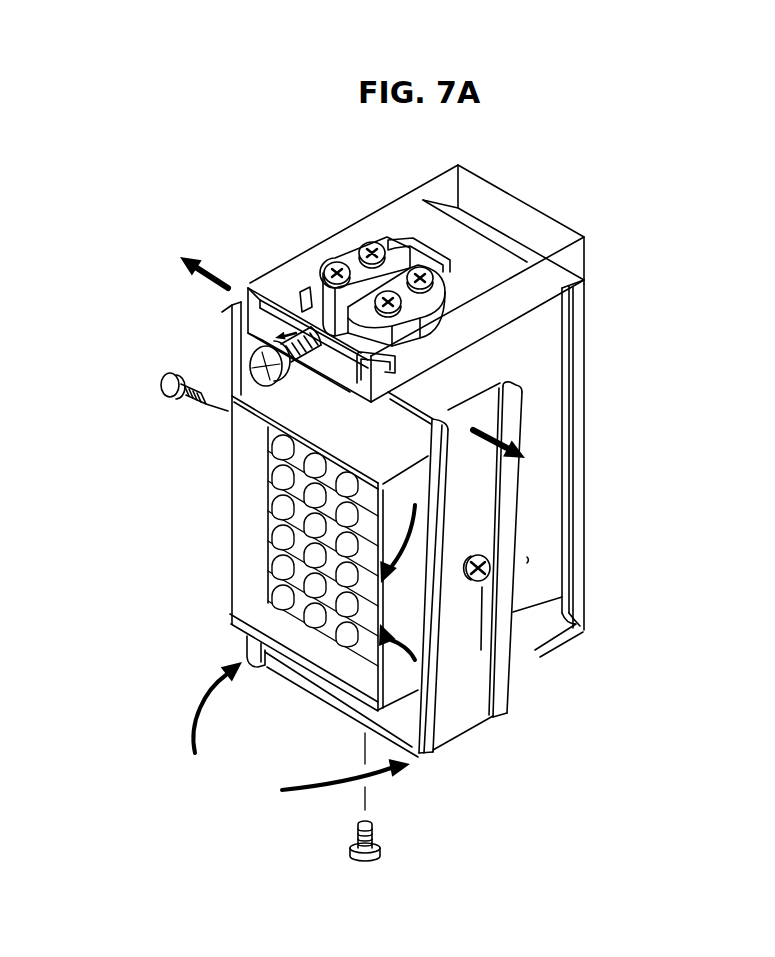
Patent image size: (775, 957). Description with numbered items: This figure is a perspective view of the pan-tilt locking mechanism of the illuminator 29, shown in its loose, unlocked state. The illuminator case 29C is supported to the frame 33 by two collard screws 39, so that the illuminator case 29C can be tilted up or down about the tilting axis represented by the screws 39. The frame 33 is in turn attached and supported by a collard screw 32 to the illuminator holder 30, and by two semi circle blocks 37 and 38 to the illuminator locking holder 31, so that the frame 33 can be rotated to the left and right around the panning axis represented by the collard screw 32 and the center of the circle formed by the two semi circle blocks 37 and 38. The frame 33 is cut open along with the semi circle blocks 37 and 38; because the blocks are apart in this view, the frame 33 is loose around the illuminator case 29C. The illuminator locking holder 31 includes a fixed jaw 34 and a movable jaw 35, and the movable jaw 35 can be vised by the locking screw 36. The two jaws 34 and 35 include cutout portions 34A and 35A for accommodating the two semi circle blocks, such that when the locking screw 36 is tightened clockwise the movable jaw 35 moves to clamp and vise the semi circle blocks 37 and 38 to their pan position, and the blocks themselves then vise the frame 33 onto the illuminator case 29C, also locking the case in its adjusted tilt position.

The illuminator 29 is at (678, 250).
The illuminator case 29C is at (232, 500).
The illuminator holder 30 is at (577, 350).
The illuminator locking holder 31 is at (573, 258).
The collard screw 32 is at (352, 852).
The frame 33 is at (461, 712).
The fixed jaw 34 is at (407, 210).
The cutout portion 34A is at (390, 240).
The movable jaw 35 is at (280, 288).
The cutout portion 35A is at (305, 290).
The locking screw 36 is at (251, 357).
The semi circle block 37 is at (350, 250).
The semi circle block 38 is at (420, 298).
The collard screws 39 is at (163, 387).